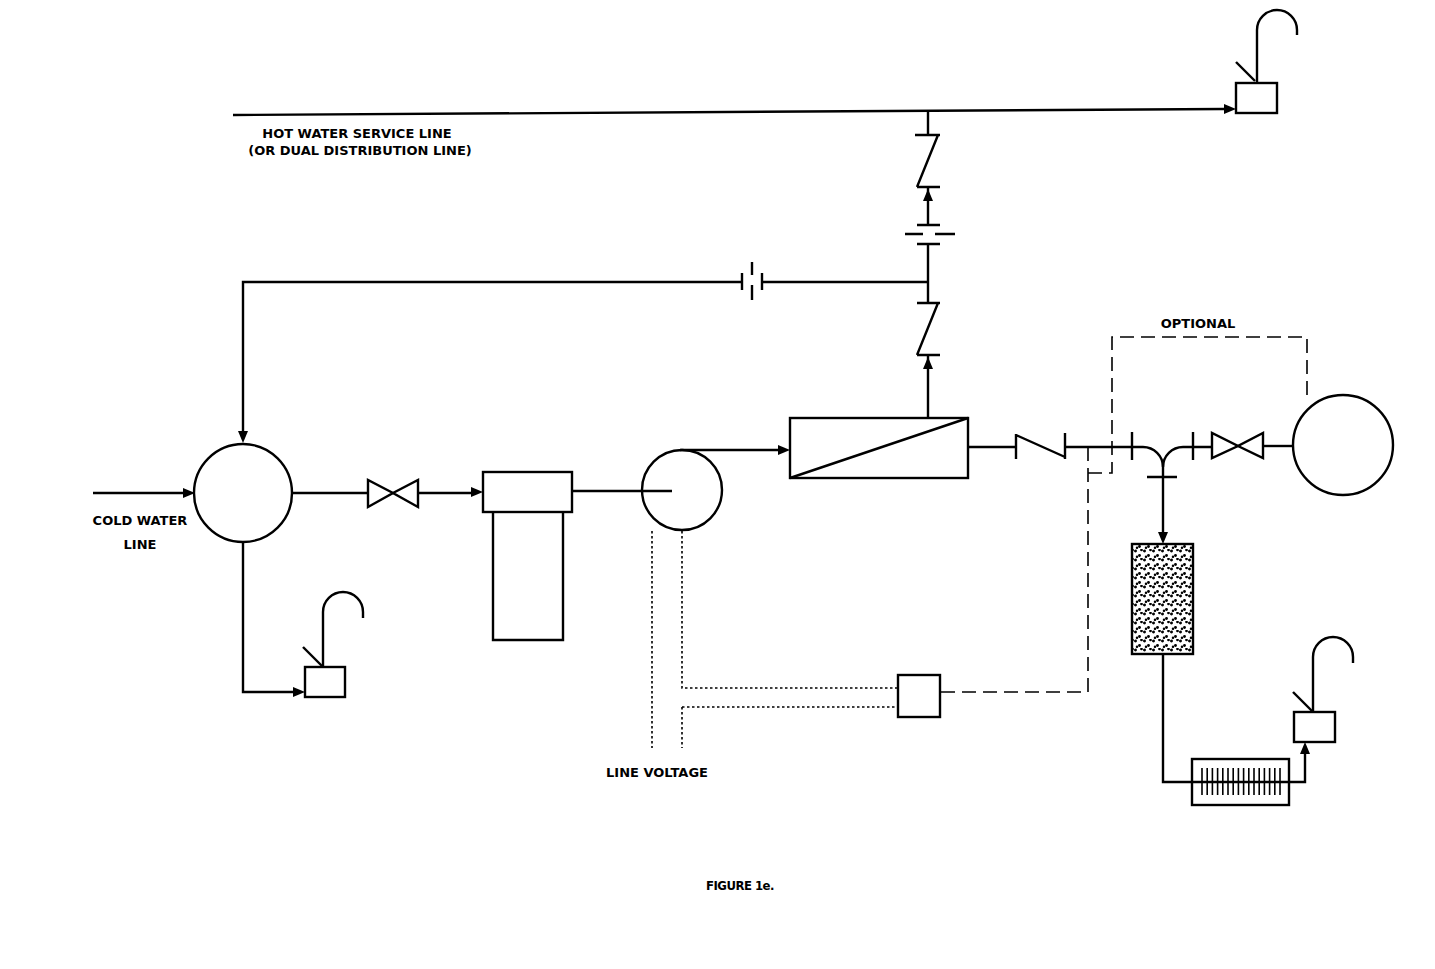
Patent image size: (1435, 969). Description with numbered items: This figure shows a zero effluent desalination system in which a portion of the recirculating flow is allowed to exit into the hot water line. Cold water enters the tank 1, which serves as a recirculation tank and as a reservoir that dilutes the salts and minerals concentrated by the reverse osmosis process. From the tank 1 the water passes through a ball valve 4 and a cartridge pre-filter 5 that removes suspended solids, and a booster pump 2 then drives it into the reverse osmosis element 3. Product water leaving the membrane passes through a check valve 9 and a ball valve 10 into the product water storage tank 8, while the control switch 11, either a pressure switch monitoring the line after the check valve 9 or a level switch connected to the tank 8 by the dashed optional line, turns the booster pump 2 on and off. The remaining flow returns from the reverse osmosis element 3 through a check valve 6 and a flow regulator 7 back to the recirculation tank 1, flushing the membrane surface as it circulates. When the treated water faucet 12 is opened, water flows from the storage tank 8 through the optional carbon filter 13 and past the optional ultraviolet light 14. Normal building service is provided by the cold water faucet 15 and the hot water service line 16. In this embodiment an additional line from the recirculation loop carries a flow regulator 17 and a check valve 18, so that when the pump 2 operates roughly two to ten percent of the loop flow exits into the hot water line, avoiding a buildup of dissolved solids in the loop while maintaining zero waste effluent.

The tank 1 is at (272, 453).
The booster pump 2 is at (645, 478).
The reverse osmosis element 3 is at (791, 466).
The ball valve 4 is at (410, 504).
The cartridge pre-filter 5 is at (563, 586).
The check valve 6 is at (917, 352).
The flow regulator 7 is at (743, 278).
The product water storage tank 8 is at (1331, 395).
The check valve 9 is at (1062, 461).
The ball valve 10 is at (1214, 457).
The control switch 11 is at (934, 673).
The treated water faucet 12 is at (1335, 713).
The carbon filter 13 is at (1193, 648).
The ultraviolet light 14 is at (1260, 759).
The faucet 15 is at (303, 683).
The hot water service line 16 is at (1236, 97).
The flow regulator 17 is at (914, 245).
The check valve 18 is at (915, 136).